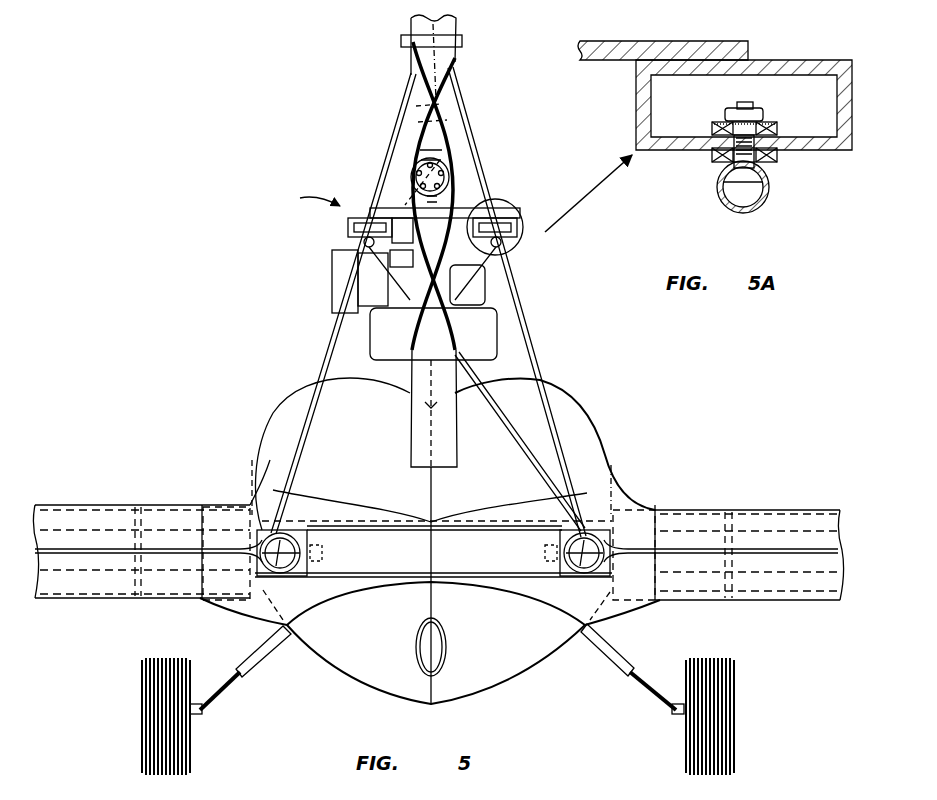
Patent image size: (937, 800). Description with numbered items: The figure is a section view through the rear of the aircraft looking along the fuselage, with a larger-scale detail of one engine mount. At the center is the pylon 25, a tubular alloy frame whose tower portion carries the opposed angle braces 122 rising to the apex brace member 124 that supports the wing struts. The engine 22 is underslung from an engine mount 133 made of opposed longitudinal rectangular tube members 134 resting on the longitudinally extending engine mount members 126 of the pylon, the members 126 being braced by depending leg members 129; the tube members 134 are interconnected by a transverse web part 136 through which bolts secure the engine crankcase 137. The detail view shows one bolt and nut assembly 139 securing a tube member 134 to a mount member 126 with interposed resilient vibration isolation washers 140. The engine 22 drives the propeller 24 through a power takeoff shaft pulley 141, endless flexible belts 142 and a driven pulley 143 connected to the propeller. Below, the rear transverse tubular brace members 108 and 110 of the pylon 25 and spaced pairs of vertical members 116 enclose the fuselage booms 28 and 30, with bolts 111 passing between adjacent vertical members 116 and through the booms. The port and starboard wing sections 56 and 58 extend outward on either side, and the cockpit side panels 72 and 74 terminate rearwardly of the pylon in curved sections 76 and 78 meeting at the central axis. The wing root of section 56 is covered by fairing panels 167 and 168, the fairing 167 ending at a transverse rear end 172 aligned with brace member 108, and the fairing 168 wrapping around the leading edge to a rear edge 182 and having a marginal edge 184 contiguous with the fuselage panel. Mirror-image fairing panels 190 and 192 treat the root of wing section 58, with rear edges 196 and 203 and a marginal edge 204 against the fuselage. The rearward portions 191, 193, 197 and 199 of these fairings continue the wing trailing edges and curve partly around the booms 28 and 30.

In FIG. 5, the engine 22 is at (488, 292).
In FIG. 5, the propeller 24 is at (458, 26).
In FIG. 5, the pylon 25 is at (538, 332).
In FIG. 5, the fuselage boom 28 is at (300, 490).
In FIG. 5, the fuselage boom 30 is at (552, 508).
In FIG. 5, the port wing section 56 is at (107, 502).
In FIG. 5, the starboard wing section 58 is at (752, 508).
In FIG. 5, the port side panel 72 is at (262, 437).
In FIG. 5, the starboard side panel 74 is at (590, 443).
In FIG. 5, the curved section 76 is at (382, 660).
In FIG. 5, the curved section 78 is at (480, 688).
In FIG. 5, the lateral tubular brace member 108 is at (350, 512).
In FIG. 5, the lateral tubular brace member 110 is at (342, 582).
In FIG. 5, the bolt 111 is at (283, 580).
In FIG. 5, the vertical member 116 is at (235, 497).
In FIG. 5, the angle brace 122 is at (384, 135).
In FIG. 5, the apex brace member 124 is at (400, 42).
In FIG. 5, the engine mount member 126 is at (362, 242).
In FIG. 5A, the engine mount member 126 is at (764, 207).
In FIG. 5, the leg member 129 is at (328, 370).
In FIG. 5, the engine mount 133 is at (309, 193).
In FIG. 5, the longitudinal rectangular tube member 134 is at (348, 226).
In FIG. 5A, the longitudinal rectangular tube member 134 is at (852, 88).
In FIG. 5, the transverse web part 136 is at (370, 198).
In FIG. 5A, the transverse web part 136 is at (715, 36).
In FIG. 5, the engine crankcase 137 is at (467, 285).
In FIG. 5A, the bolt and nut assembly 139 is at (716, 164).
In FIG. 5A, the resilient vibration isolation washer 140 is at (777, 125).
In FIG. 5, the power takeoff shaft pulley 141 is at (446, 323).
In FIG. 5, the endless flexible belt 142 is at (332, 258).
In FIG. 5, the driven pulley 143 is at (448, 165).
In FIG. 5, the fairing panel 167 is at (240, 483).
In FIG. 5, the fairing panel 168 is at (240, 614).
In FIG. 5, the transverse rear end 172 is at (376, 530).
In FIG. 5, the transverse rear edge 182 is at (420, 510).
In FIG. 5, the marginal edge 184 is at (318, 617).
In FIG. 5, the fairing panel 190 is at (620, 484).
In FIG. 5, the rearward portion 191 is at (268, 470).
In FIG. 5, the fairing panel 192 is at (626, 612).
In FIG. 5, the rearward portion 193 is at (250, 640).
In FIG. 5, the rear edge 196 is at (441, 512).
In FIG. 5, the rearward portion 197 is at (640, 534).
In FIG. 5, the rearward portion 199 is at (642, 568).
In FIG. 5, the rear edge 203 is at (437, 532).
In FIG. 5, the marginal edge 204 is at (512, 628).